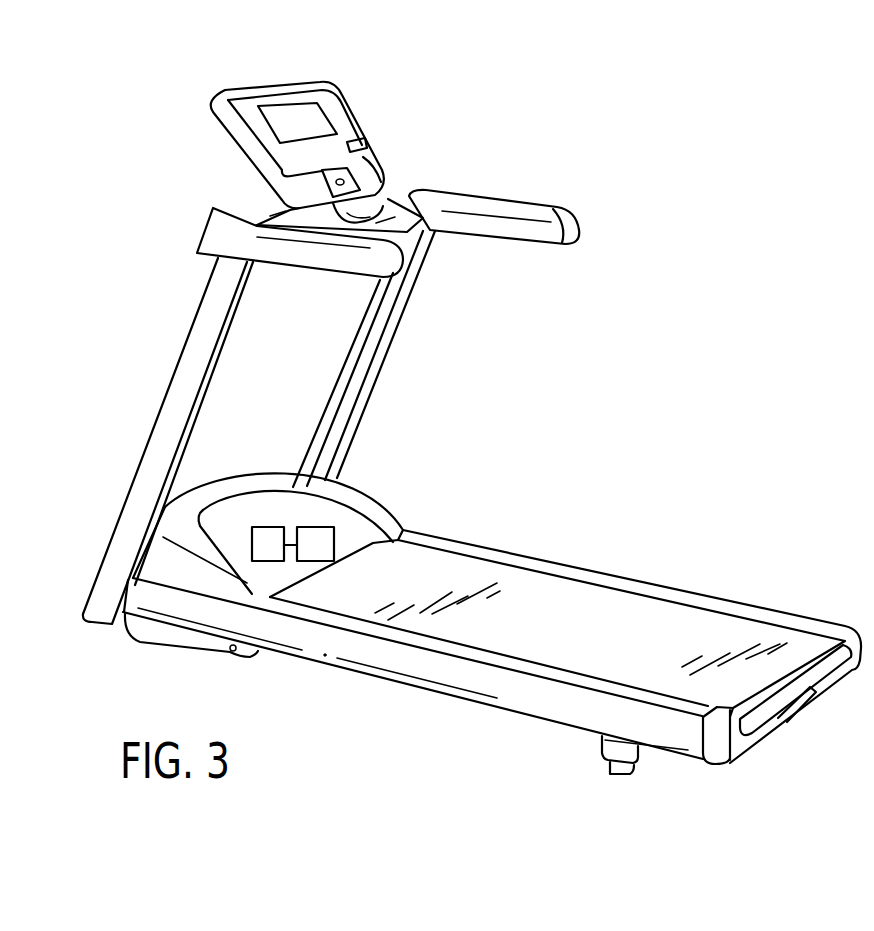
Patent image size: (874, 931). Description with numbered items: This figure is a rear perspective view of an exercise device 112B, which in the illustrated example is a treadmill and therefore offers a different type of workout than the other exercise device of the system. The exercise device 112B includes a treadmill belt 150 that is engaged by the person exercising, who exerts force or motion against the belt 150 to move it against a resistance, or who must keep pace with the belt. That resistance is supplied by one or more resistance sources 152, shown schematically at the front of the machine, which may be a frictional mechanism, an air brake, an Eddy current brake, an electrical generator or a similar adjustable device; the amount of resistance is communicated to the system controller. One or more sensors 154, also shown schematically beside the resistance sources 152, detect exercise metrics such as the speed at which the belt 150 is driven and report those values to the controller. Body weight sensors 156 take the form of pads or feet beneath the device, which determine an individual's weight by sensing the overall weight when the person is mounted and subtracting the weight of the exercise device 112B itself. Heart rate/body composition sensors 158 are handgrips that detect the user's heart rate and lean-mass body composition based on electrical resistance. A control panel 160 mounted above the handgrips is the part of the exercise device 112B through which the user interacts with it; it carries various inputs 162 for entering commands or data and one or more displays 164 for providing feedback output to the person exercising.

The exercise device 112B is at (125, 126).
The treadmill belt 150 is at (713, 628).
The resistance source 152 is at (314, 527).
The sensor 154 is at (266, 526).
The body weight sensor 156 is at (620, 773).
The heart rate/body composition sensor 158 is at (393, 200).
The control panel 160 is at (335, 120).
The inputs 162 is at (243, 111).
The display 164 is at (293, 115).